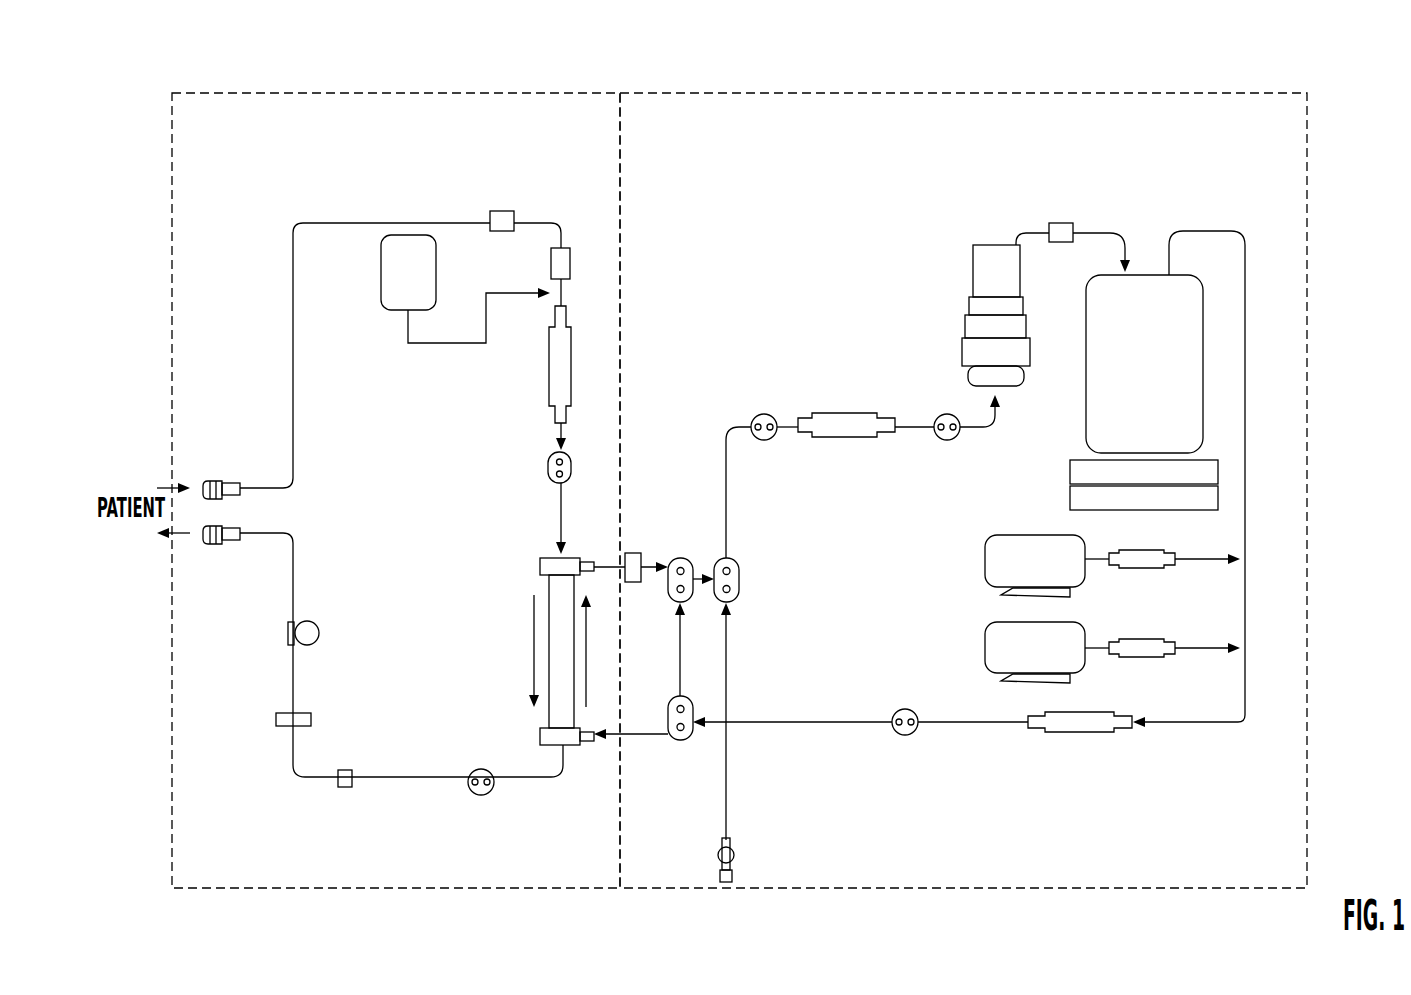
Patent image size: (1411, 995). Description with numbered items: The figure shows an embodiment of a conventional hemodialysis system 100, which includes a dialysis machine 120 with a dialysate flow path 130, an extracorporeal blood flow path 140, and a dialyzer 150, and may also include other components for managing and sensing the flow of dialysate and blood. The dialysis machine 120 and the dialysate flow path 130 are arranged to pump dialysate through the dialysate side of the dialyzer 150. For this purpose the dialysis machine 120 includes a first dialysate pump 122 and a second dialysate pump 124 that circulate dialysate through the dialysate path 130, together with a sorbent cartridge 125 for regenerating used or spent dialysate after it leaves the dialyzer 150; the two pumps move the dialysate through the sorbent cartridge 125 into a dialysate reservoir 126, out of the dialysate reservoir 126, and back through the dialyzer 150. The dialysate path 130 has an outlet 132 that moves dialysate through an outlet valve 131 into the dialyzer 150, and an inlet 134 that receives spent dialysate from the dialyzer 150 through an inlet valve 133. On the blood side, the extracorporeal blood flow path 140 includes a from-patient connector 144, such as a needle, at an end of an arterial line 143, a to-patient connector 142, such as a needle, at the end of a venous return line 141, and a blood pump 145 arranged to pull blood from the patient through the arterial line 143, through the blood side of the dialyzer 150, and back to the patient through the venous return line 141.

The hemodialysis system 100 is at (202, 66).
The dialysis machine 120 is at (963, 529).
The dialysate flow path 130 is at (903, 893).
The extracorporeal blood flow path 140 is at (272, 890).
The venous return line 141 is at (296, 564).
The to-patient connector 142 is at (218, 543).
The arterial line 143 is at (296, 408).
The from-patient connector 144 is at (212, 482).
The blood pump 145 is at (551, 377).
The dialyzer 150 is at (540, 566).
The outlet valve 131 is at (681, 740).
The outlet 132 is at (642, 738).
The inlet valve 133 is at (682, 556).
The inlet 134 is at (652, 562).
The first dialysate pump 122 is at (1075, 732).
The second dialysate pump 124 is at (852, 417).
The sorbent cartridge 125 is at (973, 268).
The dialysate reservoir 126 is at (1162, 362).